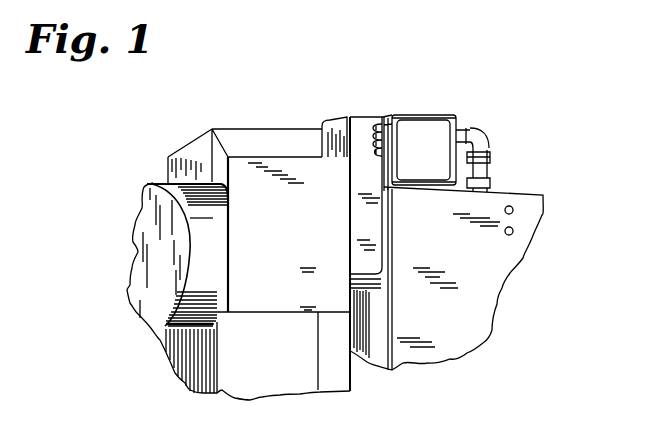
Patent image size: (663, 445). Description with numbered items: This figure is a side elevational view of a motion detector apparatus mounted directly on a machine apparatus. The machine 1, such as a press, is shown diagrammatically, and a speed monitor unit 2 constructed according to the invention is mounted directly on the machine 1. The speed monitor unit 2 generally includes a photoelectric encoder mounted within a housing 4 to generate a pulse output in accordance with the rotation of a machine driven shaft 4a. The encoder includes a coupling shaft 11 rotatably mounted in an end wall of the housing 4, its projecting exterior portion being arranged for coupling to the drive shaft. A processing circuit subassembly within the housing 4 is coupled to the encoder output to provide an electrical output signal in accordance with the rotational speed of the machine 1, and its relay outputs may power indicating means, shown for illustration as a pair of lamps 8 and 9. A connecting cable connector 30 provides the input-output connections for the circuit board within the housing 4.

The machine 1 is at (493, 276).
The speed monitor unit 2 is at (400, 146).
The housing 4 is at (428, 163).
The machine driven shaft 4a is at (372, 151).
The lamp 8 is at (514, 210).
The lamp 9 is at (514, 231).
The coupling shaft 11 is at (390, 118).
The connecting cable connector 30 is at (490, 138).